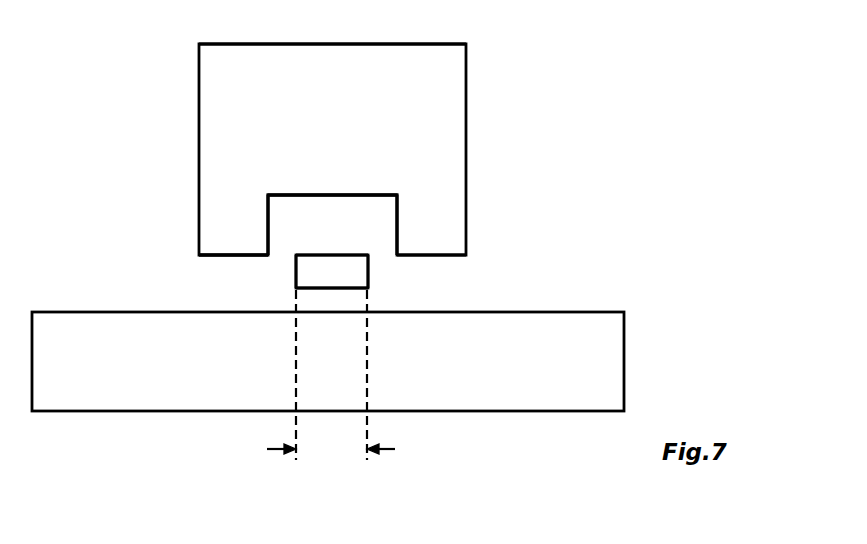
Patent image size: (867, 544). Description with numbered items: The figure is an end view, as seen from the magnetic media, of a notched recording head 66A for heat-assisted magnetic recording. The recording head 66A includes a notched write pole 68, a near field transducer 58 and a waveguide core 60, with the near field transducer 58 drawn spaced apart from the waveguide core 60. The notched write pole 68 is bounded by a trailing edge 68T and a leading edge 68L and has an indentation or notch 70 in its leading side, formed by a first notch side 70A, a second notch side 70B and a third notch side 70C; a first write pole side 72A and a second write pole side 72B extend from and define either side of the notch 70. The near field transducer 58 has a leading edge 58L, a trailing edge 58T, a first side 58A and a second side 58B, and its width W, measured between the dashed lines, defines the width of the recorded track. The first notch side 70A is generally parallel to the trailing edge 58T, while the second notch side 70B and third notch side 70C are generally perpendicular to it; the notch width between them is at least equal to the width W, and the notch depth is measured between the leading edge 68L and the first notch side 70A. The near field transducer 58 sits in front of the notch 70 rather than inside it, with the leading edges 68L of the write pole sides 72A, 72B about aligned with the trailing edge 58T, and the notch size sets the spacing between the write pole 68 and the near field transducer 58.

The notched write pole 68 is at (466, 68).
The trailing edge 68T is at (305, 43).
The leading edge 68L is at (208, 255).
The first write pole side 72A is at (217, 218).
The second write pole side 72B is at (453, 233).
The notch 70 is at (304, 213).
The first notch side 70A is at (318, 195).
The second notch side 70B is at (266, 228).
The third notch side 70C is at (398, 222).
The near field transducer 58 is at (332, 271).
The first side 58A is at (296, 267).
The second side 58B is at (368, 275).
The trailing edge 58T is at (333, 255).
The leading edge 58L is at (313, 288).
The waveguide core 60 is at (624, 340).
The notched recording head 66A is at (555, 130).
The width W is at (331, 375).